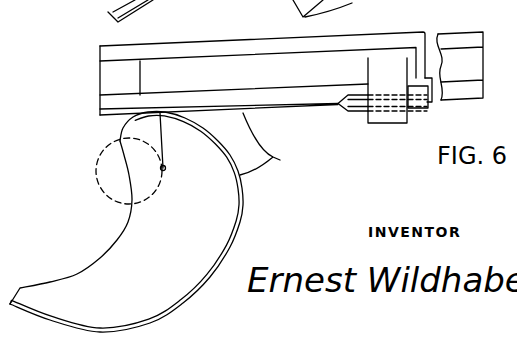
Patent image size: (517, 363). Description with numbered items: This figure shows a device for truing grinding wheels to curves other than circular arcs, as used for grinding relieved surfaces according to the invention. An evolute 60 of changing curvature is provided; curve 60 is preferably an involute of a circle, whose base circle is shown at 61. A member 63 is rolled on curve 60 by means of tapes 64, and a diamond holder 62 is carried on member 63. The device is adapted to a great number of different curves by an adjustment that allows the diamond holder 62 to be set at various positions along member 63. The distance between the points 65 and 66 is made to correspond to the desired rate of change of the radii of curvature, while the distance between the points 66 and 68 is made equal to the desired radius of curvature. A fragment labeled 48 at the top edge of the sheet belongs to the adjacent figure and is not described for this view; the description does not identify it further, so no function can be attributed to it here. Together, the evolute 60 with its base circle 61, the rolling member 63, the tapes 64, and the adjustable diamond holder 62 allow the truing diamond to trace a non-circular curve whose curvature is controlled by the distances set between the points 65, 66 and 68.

The cutter blade fragment 48 is at (206, 0).
The evolute 60 is at (243, 210).
The base circle 61 is at (154, 193).
The diamond holder 62 is at (388, 78).
The member 63 is at (385, 42).
The tapes 64 is at (272, 144).
The point defining distance to point 66 65 is at (166, 168).
The point defining distances to points 65 and 68 66 is at (162, 113).
The point defining distance to point 66 68 is at (344, 108).